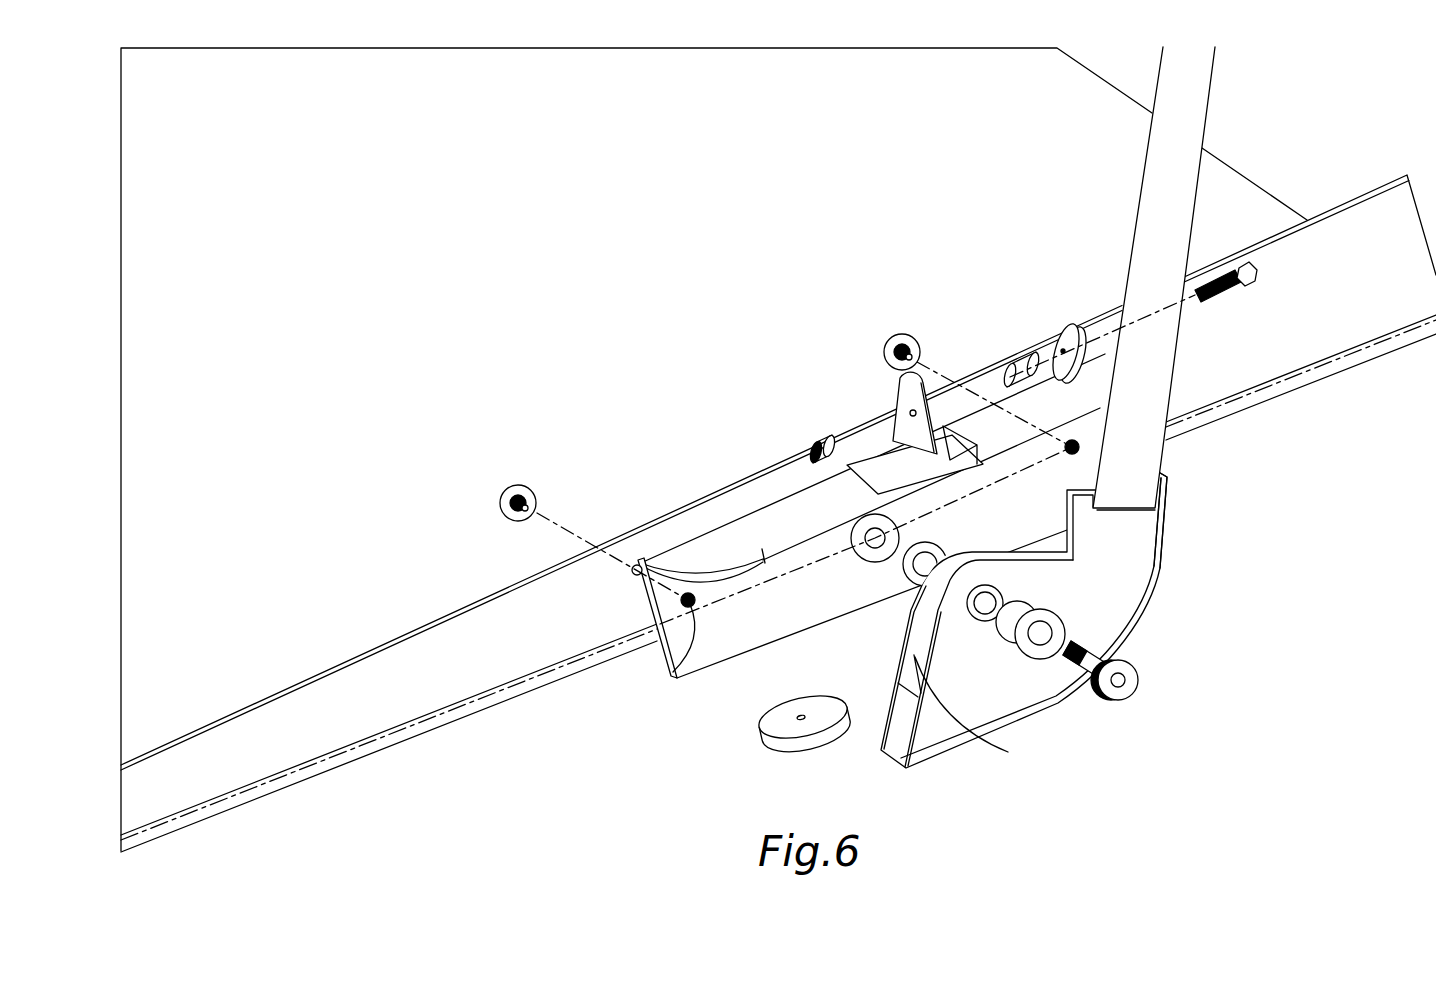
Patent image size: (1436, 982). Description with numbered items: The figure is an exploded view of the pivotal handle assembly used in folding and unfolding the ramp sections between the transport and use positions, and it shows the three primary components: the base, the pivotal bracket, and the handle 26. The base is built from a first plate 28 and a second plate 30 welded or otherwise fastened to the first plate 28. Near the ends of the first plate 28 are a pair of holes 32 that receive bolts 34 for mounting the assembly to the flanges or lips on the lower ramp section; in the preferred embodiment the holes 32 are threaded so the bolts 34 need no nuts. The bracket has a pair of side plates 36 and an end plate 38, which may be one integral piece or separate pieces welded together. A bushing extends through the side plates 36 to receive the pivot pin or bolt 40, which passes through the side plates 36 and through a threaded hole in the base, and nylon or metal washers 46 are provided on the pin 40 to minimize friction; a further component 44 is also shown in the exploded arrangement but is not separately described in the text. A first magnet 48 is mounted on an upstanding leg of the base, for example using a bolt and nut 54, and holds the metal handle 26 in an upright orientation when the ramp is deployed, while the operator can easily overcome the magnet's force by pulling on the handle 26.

The handle 26 is at (1145, 163).
The first plate 28 is at (722, 638).
The second plate 30 is at (730, 537).
The holes 32 is at (668, 670).
The bolts 34 is at (510, 488).
The side plates 36 is at (940, 738).
The end plate 38 is at (1168, 478).
The pivot pin or bolt 40 is at (1137, 683).
The washer 44 is at (996, 590).
The washers 46 is at (1045, 612).
The first magnet 48 is at (1055, 322).
The nut 54 is at (813, 440).